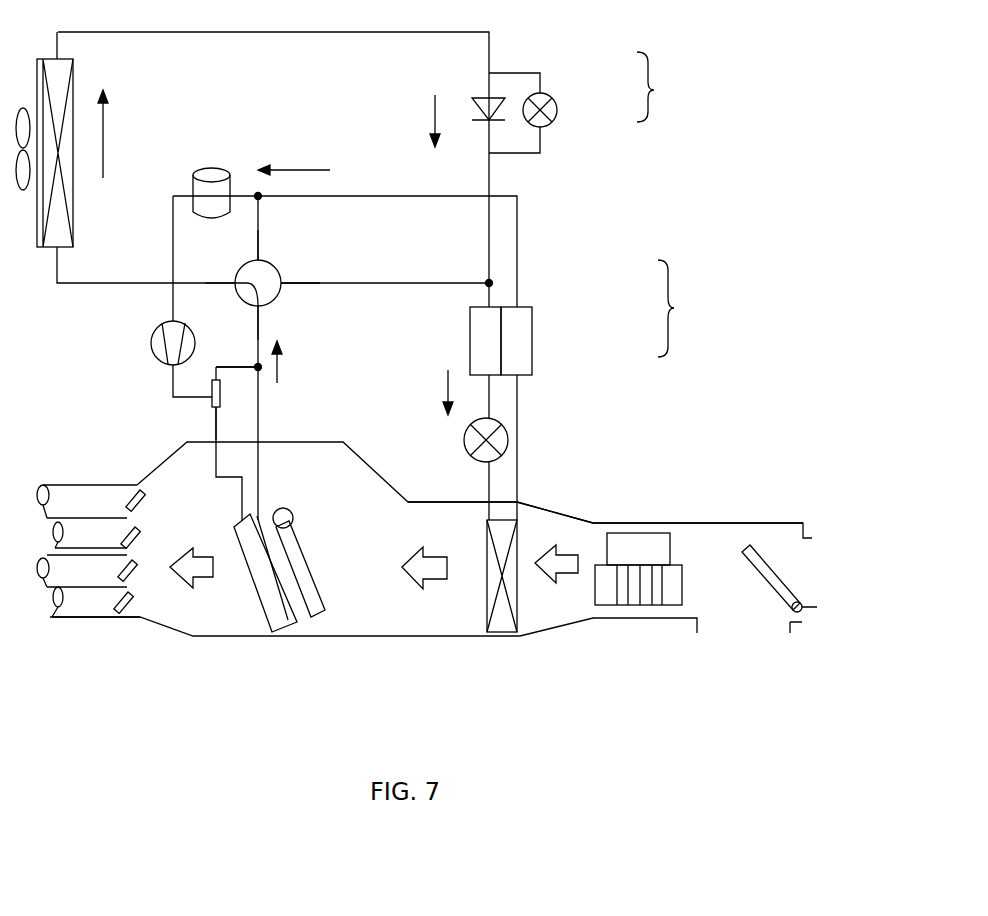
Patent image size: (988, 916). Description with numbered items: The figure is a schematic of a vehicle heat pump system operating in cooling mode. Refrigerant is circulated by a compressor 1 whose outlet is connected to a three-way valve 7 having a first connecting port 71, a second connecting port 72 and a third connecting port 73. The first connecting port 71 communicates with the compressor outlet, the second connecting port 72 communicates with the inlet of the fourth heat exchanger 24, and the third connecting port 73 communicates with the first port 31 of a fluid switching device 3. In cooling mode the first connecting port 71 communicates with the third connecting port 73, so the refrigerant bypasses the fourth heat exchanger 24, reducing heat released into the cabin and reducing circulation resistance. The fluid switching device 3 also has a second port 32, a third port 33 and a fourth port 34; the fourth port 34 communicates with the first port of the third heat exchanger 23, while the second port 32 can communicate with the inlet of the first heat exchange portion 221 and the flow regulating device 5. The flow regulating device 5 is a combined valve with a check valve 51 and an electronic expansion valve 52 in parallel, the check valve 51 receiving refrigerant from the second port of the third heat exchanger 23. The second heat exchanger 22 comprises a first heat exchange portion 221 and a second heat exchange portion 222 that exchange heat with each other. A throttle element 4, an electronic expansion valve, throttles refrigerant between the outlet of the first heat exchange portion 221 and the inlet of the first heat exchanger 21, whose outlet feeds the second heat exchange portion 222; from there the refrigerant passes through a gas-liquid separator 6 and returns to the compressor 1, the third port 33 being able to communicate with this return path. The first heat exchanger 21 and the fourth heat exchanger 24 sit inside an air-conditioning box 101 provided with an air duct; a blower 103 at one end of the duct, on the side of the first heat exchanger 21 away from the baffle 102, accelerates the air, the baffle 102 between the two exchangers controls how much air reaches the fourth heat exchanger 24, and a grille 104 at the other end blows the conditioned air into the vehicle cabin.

The compressor 1 is at (161, 343).
The fluid switching device 3 is at (267, 270).
The first port 31 is at (277, 324).
The second port 32 is at (300, 273).
The third port 33 is at (241, 245).
The fourth port 34 is at (218, 297).
The throttle element 4 is at (470, 440).
The flow regulating device 5 is at (573, 89).
The check valve 51 is at (484, 100).
The electronic expansion valve 52 is at (553, 116).
The gas-liquid separator 6 is at (211, 178).
The three-way valve 7 is at (197, 412).
The first connecting port 71 is at (200, 392).
The second connecting port 72 is at (205, 423).
The third connecting port 73 is at (237, 378).
The first heat exchanger 21 is at (518, 576).
The second heat exchanger 22 is at (587, 317).
The first heat exchange portion 221 is at (480, 335).
The second heat exchange portion 222 is at (522, 363).
The third heat exchanger 23 is at (64, 153).
The fourth heat exchanger 24 is at (259, 573).
The air-conditioning box 101 is at (562, 517).
The baffle 102 is at (316, 562).
The blower 103 is at (706, 583).
The grille 104 is at (112, 551).